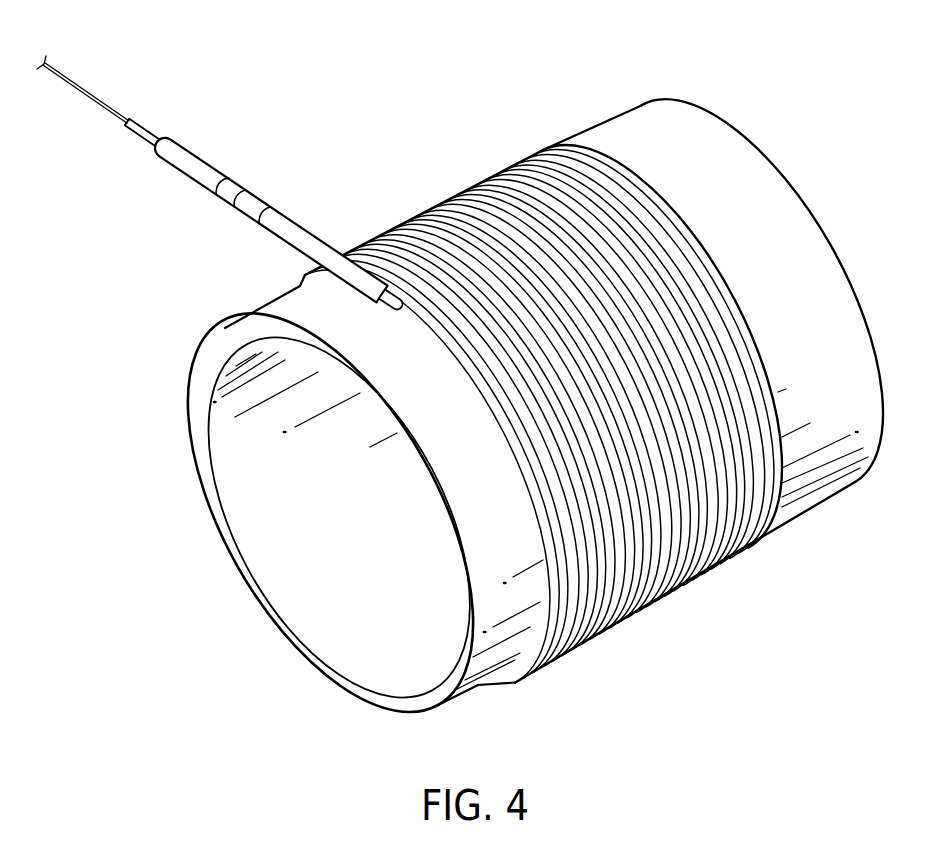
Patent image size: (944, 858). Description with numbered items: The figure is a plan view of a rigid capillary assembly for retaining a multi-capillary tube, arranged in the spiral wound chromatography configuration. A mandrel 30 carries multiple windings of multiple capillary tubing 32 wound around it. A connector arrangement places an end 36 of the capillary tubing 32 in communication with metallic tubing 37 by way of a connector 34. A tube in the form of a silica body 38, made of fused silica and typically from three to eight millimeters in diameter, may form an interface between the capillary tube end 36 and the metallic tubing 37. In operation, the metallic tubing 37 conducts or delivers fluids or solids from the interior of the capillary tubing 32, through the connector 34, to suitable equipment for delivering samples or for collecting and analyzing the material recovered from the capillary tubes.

The mandrel 30 is at (497, 635).
The capillary tubing 32 is at (708, 567).
The connector 34 is at (225, 202).
The end of capillary tubing 36 is at (396, 306).
The metallic tubing 37 is at (103, 101).
The silica body 38 is at (312, 235).